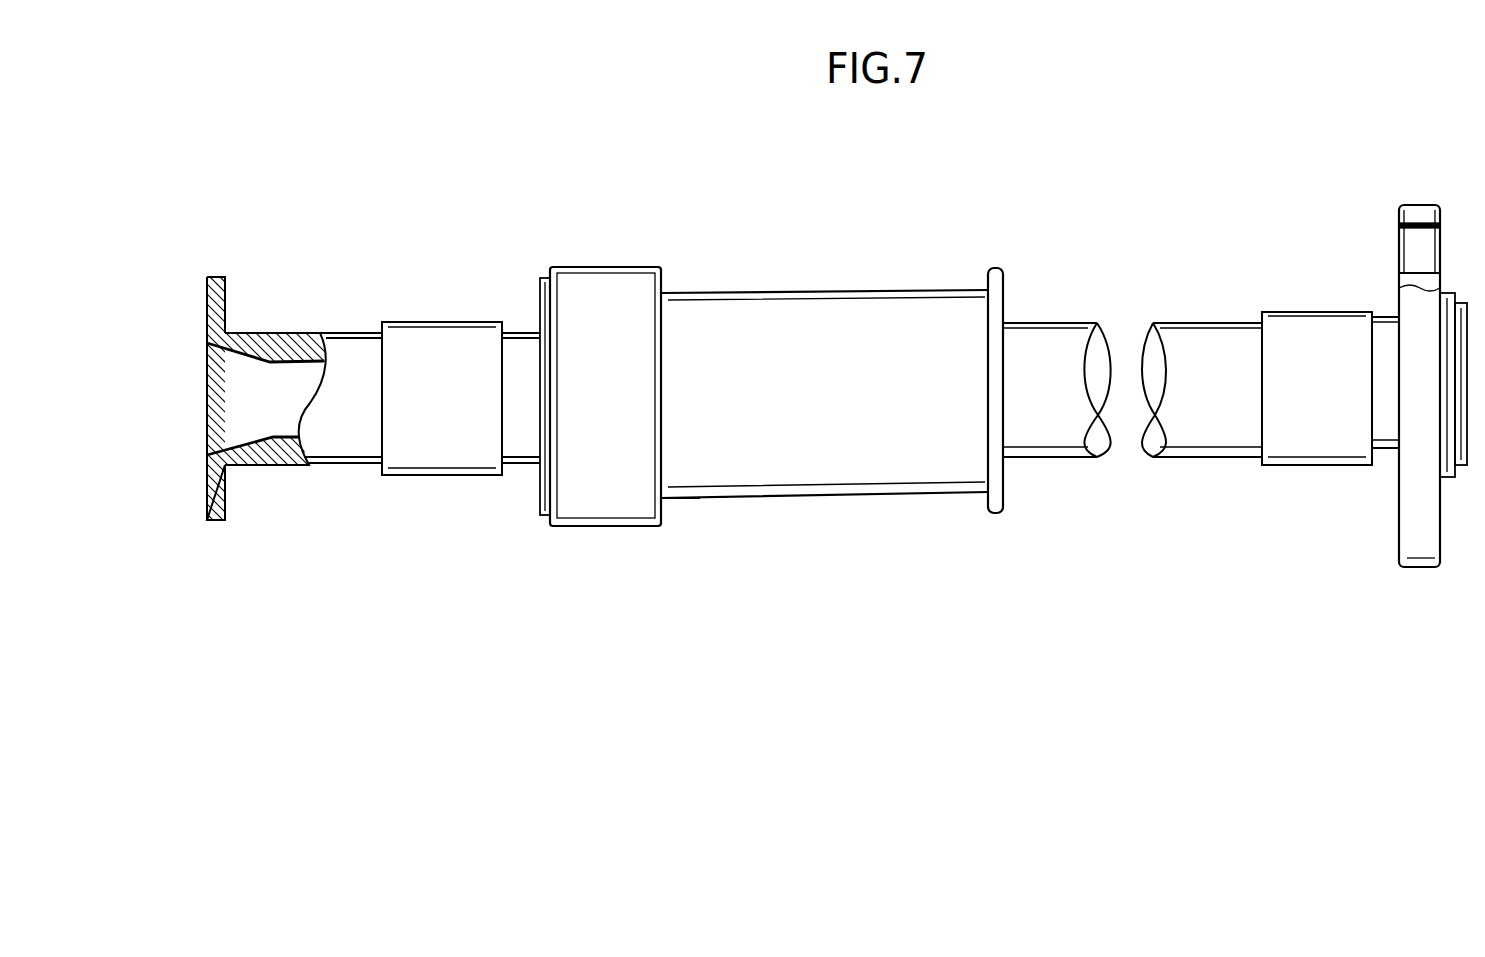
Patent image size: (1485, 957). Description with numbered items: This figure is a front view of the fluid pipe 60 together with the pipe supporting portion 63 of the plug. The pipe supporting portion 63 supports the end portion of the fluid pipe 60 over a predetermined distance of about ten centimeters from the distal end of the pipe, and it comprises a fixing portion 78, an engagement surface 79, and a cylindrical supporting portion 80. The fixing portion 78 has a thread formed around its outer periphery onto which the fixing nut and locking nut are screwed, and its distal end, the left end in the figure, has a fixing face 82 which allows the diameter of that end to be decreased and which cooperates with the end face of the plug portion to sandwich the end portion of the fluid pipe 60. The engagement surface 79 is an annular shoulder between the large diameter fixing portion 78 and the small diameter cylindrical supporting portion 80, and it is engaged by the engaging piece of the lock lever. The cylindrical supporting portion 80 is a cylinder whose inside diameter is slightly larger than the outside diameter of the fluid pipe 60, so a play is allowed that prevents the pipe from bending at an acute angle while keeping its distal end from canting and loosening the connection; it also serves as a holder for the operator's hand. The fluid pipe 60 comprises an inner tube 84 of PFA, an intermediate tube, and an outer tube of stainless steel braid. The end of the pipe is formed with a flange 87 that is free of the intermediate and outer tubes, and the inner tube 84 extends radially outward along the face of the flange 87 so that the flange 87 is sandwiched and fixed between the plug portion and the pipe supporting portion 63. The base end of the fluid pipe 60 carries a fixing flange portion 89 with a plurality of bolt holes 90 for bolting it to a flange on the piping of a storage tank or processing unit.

The fluid pipe 60 is at (1071, 318).
The pipe supporting portion 63 is at (832, 360).
The fixing portion 78 is at (597, 285).
The engagement surface 79 is at (665, 510).
The cylindrical supporting portion 80 is at (765, 293).
The fixing face 82 is at (540, 500).
The inner tube 84 is at (235, 356).
The flange 87 is at (220, 525).
The fixing flange portion 89 is at (1422, 205).
The bolt holes 90 is at (1412, 235).